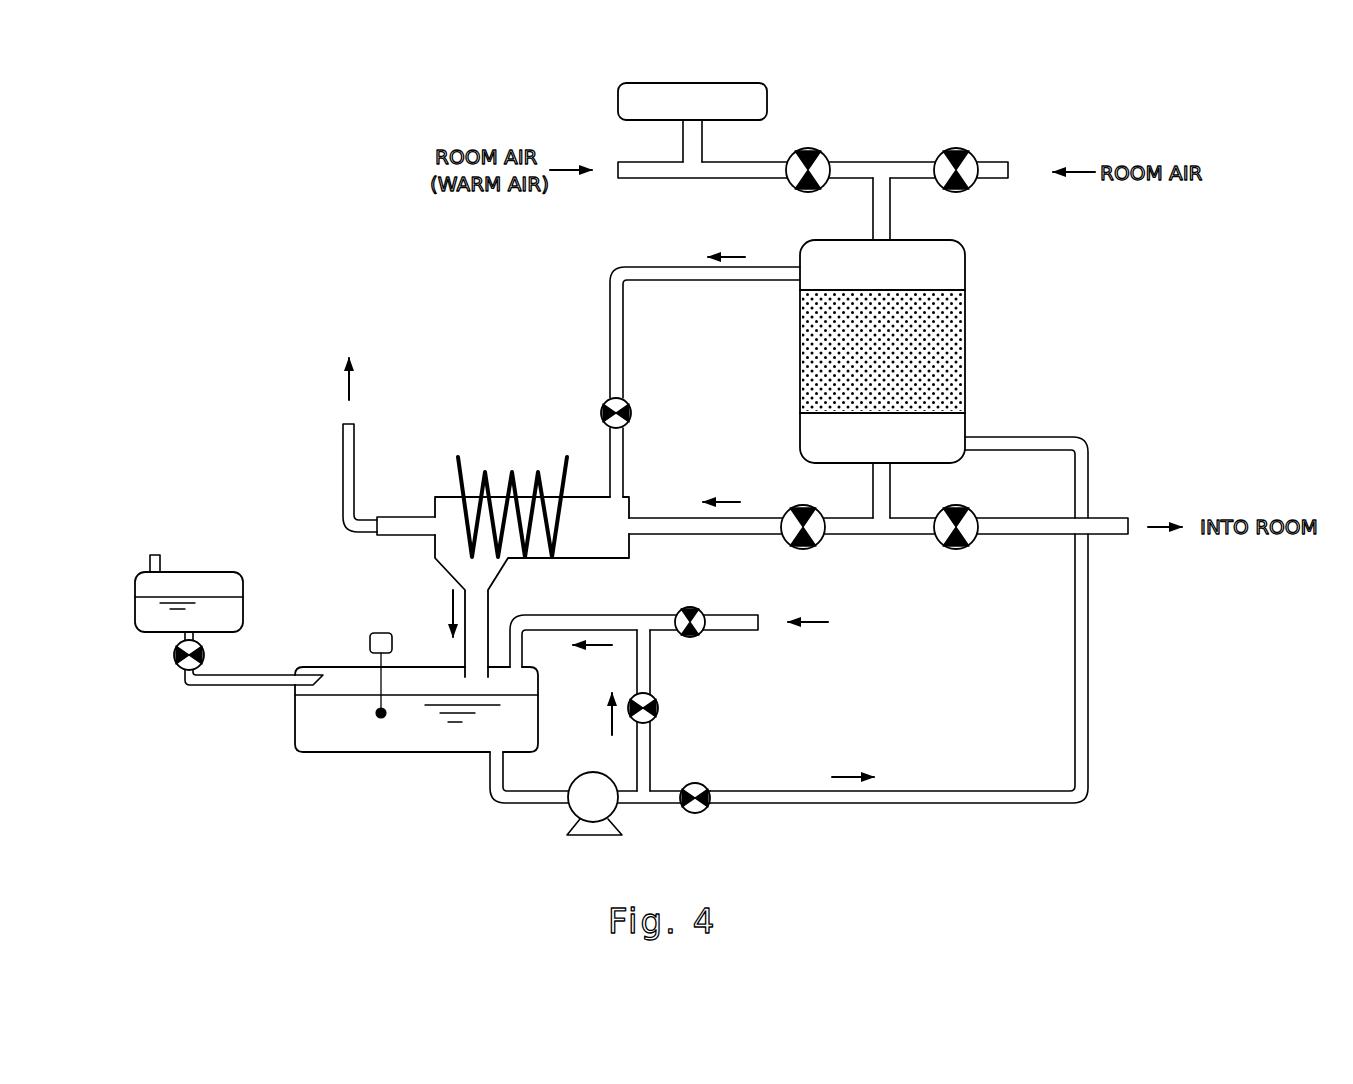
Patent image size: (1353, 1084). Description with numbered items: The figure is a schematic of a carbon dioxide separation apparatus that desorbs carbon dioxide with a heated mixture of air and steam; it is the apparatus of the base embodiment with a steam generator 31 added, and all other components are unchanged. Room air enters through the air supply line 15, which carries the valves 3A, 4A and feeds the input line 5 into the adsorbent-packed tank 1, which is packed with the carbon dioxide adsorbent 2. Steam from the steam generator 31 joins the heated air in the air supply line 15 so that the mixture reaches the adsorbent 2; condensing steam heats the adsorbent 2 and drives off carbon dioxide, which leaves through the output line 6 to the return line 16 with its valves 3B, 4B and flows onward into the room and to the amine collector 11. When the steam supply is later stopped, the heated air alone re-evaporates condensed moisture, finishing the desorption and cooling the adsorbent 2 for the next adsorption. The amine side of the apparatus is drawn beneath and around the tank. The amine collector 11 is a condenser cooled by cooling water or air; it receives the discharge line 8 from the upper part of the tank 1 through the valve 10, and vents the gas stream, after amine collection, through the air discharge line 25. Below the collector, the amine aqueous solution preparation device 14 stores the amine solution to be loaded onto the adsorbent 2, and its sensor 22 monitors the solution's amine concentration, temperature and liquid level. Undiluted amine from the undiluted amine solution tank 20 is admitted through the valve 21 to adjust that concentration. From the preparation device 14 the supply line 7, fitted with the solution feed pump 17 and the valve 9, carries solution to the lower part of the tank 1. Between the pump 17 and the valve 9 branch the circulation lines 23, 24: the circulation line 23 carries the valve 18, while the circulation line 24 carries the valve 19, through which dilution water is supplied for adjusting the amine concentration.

The adsorbent-packed tank 1 is at (965, 250).
The carbon dioxide adsorbent 2 is at (958, 318).
The valve 3A is at (957, 148).
The valve 3B is at (957, 550).
The valve 4A is at (810, 148).
The valve 4B is at (803, 550).
The input line 5 is at (890, 212).
The output line 6 is at (890, 483).
The supply line 7 is at (1088, 662).
The discharge line 8 is at (716, 282).
The valve 9 is at (695, 813).
The valve 10 is at (632, 413).
The amine collector 11 is at (447, 497).
The amine aqueous solution preparation device 14 is at (415, 752).
The air supply line 15 is at (903, 162).
The return line 16 is at (878, 538).
The solution feed pump 17 is at (603, 835).
The valve 18 is at (658, 708).
The valve 19 is at (690, 607).
The undiluted amine solution tank 20 is at (243, 598).
The valve 21 is at (174, 655).
The sensor 22 is at (381, 633).
The circulation line 23 is at (637, 660).
The circulation line 24 is at (567, 614).
The air discharge line 25 is at (343, 468).
The steam generator 31 is at (618, 101).